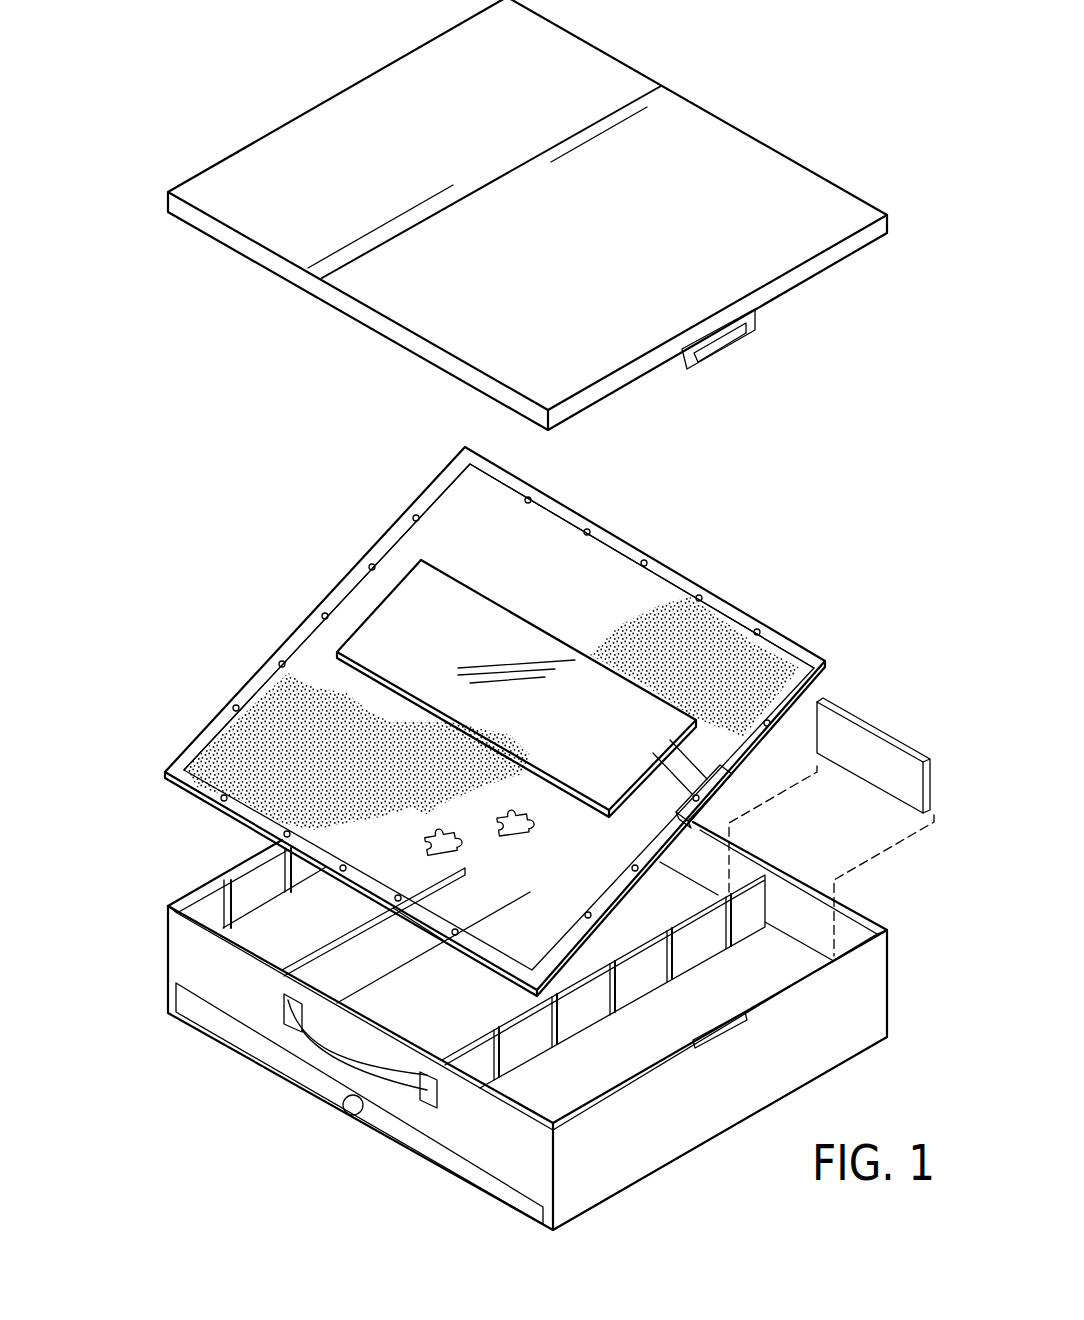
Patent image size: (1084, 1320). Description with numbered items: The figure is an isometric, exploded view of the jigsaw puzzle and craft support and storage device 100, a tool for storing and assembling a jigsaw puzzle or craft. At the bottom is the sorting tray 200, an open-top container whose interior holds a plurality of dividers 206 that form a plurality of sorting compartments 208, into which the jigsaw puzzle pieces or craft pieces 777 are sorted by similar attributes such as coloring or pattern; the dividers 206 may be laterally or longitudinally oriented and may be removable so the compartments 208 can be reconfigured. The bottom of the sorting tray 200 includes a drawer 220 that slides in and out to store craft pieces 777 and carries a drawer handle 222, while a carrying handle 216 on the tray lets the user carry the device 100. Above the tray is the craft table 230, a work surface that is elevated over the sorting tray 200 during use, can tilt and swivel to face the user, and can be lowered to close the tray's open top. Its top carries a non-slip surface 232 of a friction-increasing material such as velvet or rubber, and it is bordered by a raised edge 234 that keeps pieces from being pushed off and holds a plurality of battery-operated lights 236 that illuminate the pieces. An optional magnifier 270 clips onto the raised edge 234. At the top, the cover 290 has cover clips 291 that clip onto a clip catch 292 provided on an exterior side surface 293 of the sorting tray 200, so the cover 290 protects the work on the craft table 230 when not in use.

The jigsaw puzzle and craft support and storage device 100 is at (141, 349).
The sorting tray 200 is at (836, 1058).
The dividers 206 is at (334, 974).
The sorting compartments 208 is at (428, 1032).
The carrying handle 216 is at (308, 1050).
The drawer 220 is at (180, 992).
The drawer handle 222 is at (350, 1108).
The craft table 230 is at (656, 556).
The non-slip surface 232 is at (781, 690).
The raised edge 234 is at (510, 481).
The lights 236 is at (366, 566).
The magnifier 270 is at (620, 700).
The cover 290 is at (741, 176).
The cover clips 291 is at (730, 340).
The box latch 292 is at (720, 1048).
The exterior side surface 293 is at (633, 1123).
The craft pieces 777 is at (497, 811).